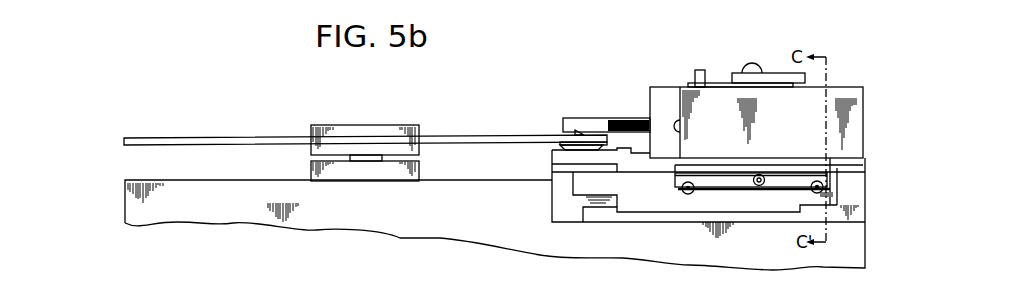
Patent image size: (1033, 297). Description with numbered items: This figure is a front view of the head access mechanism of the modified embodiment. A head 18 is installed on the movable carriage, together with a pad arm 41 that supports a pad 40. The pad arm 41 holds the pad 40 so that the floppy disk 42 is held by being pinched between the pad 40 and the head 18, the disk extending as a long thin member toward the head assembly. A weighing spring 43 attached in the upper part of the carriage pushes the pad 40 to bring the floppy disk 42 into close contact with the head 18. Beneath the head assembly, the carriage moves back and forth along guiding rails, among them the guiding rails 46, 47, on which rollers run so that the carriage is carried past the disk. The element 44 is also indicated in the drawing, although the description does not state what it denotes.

The head 18 is at (563, 157).
The pad 40 is at (580, 132).
The pad arm 41 is at (603, 118).
The floppy disk 42 is at (465, 137).
The weighing spring 43 is at (621, 173).
The base plate 44 is at (722, 205).
The guiding rail 46 is at (759, 188).
The guiding rail 47 is at (817, 181).